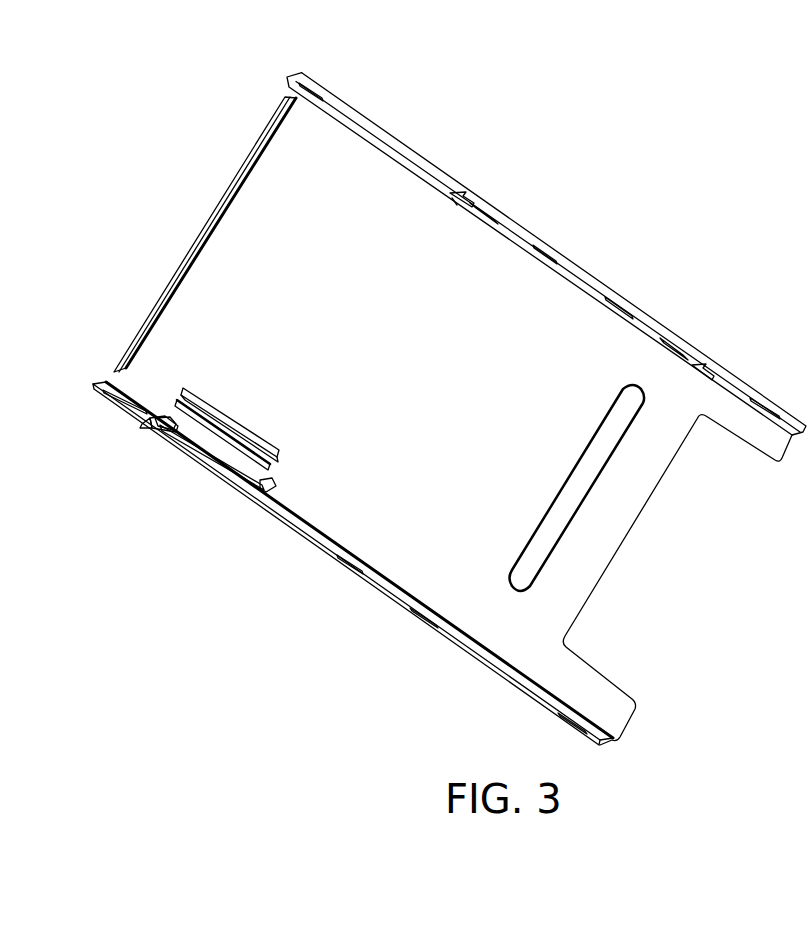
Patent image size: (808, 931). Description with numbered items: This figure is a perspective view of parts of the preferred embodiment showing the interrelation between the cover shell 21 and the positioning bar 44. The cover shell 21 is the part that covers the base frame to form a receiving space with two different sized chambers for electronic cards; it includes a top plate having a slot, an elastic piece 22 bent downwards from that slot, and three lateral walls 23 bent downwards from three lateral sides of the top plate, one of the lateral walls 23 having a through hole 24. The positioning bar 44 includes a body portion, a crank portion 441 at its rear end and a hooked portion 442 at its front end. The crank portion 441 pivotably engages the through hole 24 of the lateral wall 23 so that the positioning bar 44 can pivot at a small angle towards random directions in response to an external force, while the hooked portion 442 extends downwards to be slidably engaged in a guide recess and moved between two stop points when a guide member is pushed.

The cover shell 21 is at (222, 283).
The elastic piece 22 is at (273, 473).
The lateral wall 23 is at (222, 480).
The through hole 24 is at (157, 423).
The positioning bar 44 is at (193, 445).
The crank portion 441 is at (140, 428).
The hooked portion 442 is at (270, 498).